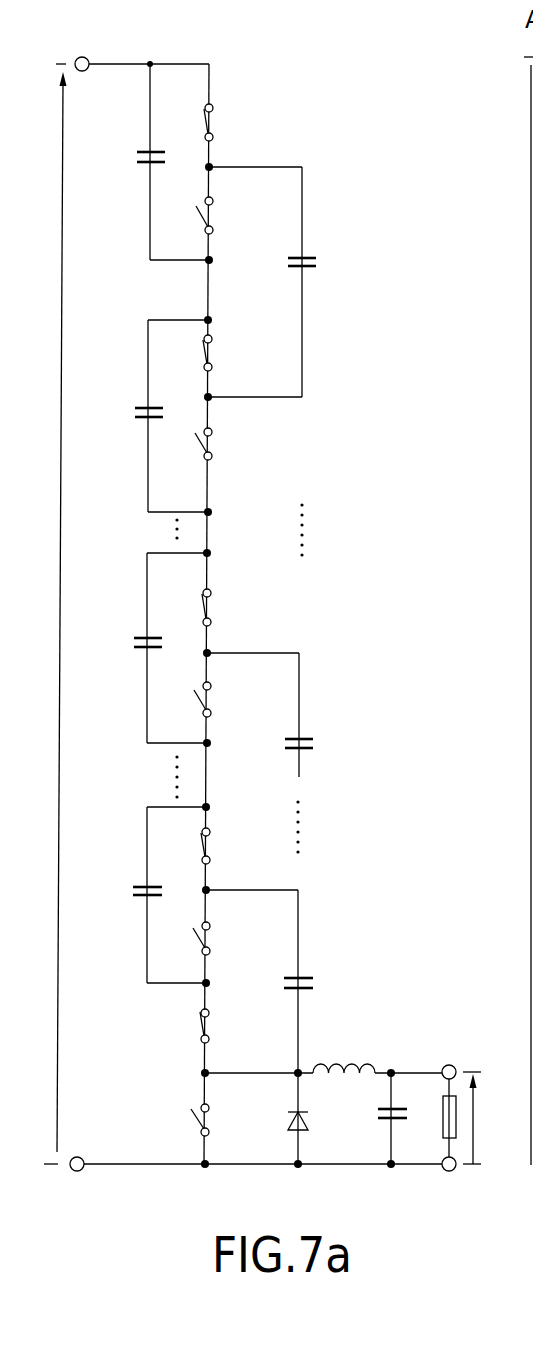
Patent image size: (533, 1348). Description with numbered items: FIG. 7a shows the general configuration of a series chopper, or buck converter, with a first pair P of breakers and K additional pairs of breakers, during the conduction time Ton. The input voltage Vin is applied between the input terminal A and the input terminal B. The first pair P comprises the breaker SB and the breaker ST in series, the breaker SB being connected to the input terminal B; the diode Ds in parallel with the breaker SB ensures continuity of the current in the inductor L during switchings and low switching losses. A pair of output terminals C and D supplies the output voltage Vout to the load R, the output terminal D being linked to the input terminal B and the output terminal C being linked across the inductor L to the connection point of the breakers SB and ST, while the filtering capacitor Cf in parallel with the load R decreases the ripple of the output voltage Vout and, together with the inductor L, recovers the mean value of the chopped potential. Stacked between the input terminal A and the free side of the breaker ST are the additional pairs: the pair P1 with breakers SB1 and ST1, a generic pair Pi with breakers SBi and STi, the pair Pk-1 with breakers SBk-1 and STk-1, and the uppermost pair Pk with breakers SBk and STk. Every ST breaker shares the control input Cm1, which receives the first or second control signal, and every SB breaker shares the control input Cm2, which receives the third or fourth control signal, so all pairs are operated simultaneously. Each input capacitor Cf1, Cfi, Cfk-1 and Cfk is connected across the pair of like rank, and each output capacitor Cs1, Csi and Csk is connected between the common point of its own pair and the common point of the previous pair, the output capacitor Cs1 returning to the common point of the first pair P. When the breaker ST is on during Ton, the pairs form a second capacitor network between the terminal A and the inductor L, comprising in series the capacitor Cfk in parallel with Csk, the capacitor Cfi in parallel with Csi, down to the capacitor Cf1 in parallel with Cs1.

The input terminal A is at (87, 58).
The input terminal B is at (82, 1170).
The output terminal C is at (449, 1064).
The output terminal D is at (449, 1172).
The input voltage Vin is at (75, 612).
The output voltage Vout is at (492, 1118).
The breaker of pair k STk is at (203, 125).
The breaker of pair k SBk is at (196, 218).
The input capacitor of rank k Cfk is at (137, 156).
The pair of breakers Pk is at (193, 173).
The output capacitor of rank k Csk is at (316, 262).
The breaker of pair k-1 STk-1 is at (202, 363).
The breaker of pair k-1 SBk-1 is at (197, 459).
The input capacitor of rank k-1 Cfk-1 is at (136, 412).
The pair of breakers Pk-1 is at (192, 406).
The breaker of pair i STi is at (201, 610).
The breaker of pair i SBi is at (195, 698).
The input capacitor of rank i Cfi is at (132, 643).
The pair of breakers Pi is at (192, 659).
The output capacitor of rank i Csi is at (313, 745).
The breaker of pair 1 ST1 is at (200, 848).
The breaker of pair 1 SB1 is at (194, 955).
The input capacitor of rank 1 Cf1 is at (135, 897).
The pair of breakers P1 is at (191, 899).
The output capacitor of rank 1 Cs1 is at (313, 982).
The breaker ST is at (199, 1026).
The breaker SB is at (196, 1122).
The pair of breakers P is at (187, 1077).
The diode Ds is at (292, 1118).
The inductor L is at (348, 1062).
The filtering capacitor Cf is at (380, 1112).
The load R is at (441, 1122).
The control input Cm1 is at (252, 120).
The control input Cm2 is at (253, 212).